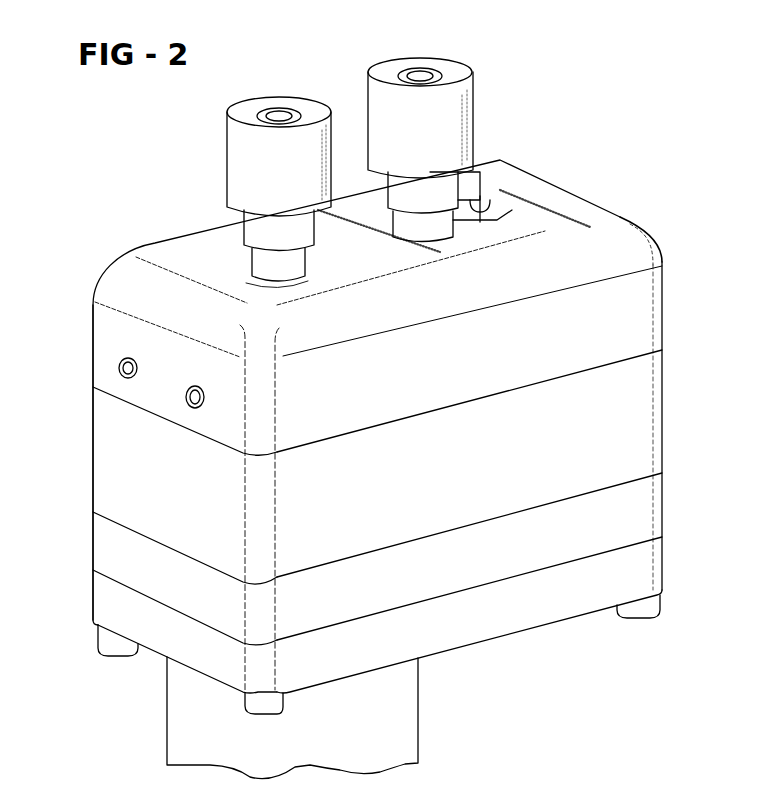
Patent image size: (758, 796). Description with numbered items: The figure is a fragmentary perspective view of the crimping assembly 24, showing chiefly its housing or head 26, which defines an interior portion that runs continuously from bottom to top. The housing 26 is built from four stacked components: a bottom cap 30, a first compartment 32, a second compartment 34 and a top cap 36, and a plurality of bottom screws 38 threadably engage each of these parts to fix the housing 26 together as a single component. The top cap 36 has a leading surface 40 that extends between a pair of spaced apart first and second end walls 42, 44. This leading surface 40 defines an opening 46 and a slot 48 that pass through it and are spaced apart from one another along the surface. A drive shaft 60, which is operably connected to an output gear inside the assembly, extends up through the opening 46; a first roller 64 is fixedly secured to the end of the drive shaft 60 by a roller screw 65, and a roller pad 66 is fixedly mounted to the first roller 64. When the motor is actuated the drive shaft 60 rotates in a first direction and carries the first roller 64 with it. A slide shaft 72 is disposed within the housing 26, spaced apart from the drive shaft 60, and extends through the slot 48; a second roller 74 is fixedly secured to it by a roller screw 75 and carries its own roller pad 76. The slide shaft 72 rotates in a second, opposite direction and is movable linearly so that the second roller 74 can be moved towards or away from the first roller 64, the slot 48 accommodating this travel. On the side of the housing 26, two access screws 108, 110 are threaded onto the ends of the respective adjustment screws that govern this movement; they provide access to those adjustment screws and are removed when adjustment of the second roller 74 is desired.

The crimping assembly 24 is at (96, 263).
The housing 26 is at (92, 451).
The bottom cap 30 is at (93, 607).
The first compartment 32 is at (93, 537).
The second compartment 34 is at (665, 402).
The top cap 36 is at (665, 289).
The bottom screws 38 is at (123, 658).
The leading surface 40 is at (355, 271).
The first end wall 42 is at (108, 328).
The second end wall 44 is at (663, 261).
The opening 46 is at (246, 288).
The slot 48 is at (490, 205).
The drive shaft 60 is at (247, 272).
The first roller 64 is at (242, 230).
The roller screw 65 is at (282, 112).
The roller pad 66 is at (244, 139).
The slide shaft 72 is at (392, 218).
The second roller 74 is at (466, 180).
The roller screw 75 is at (422, 72).
The roller pad 76 is at (432, 100).
The access screw 108 is at (118, 368).
The access screw 110 is at (186, 397).